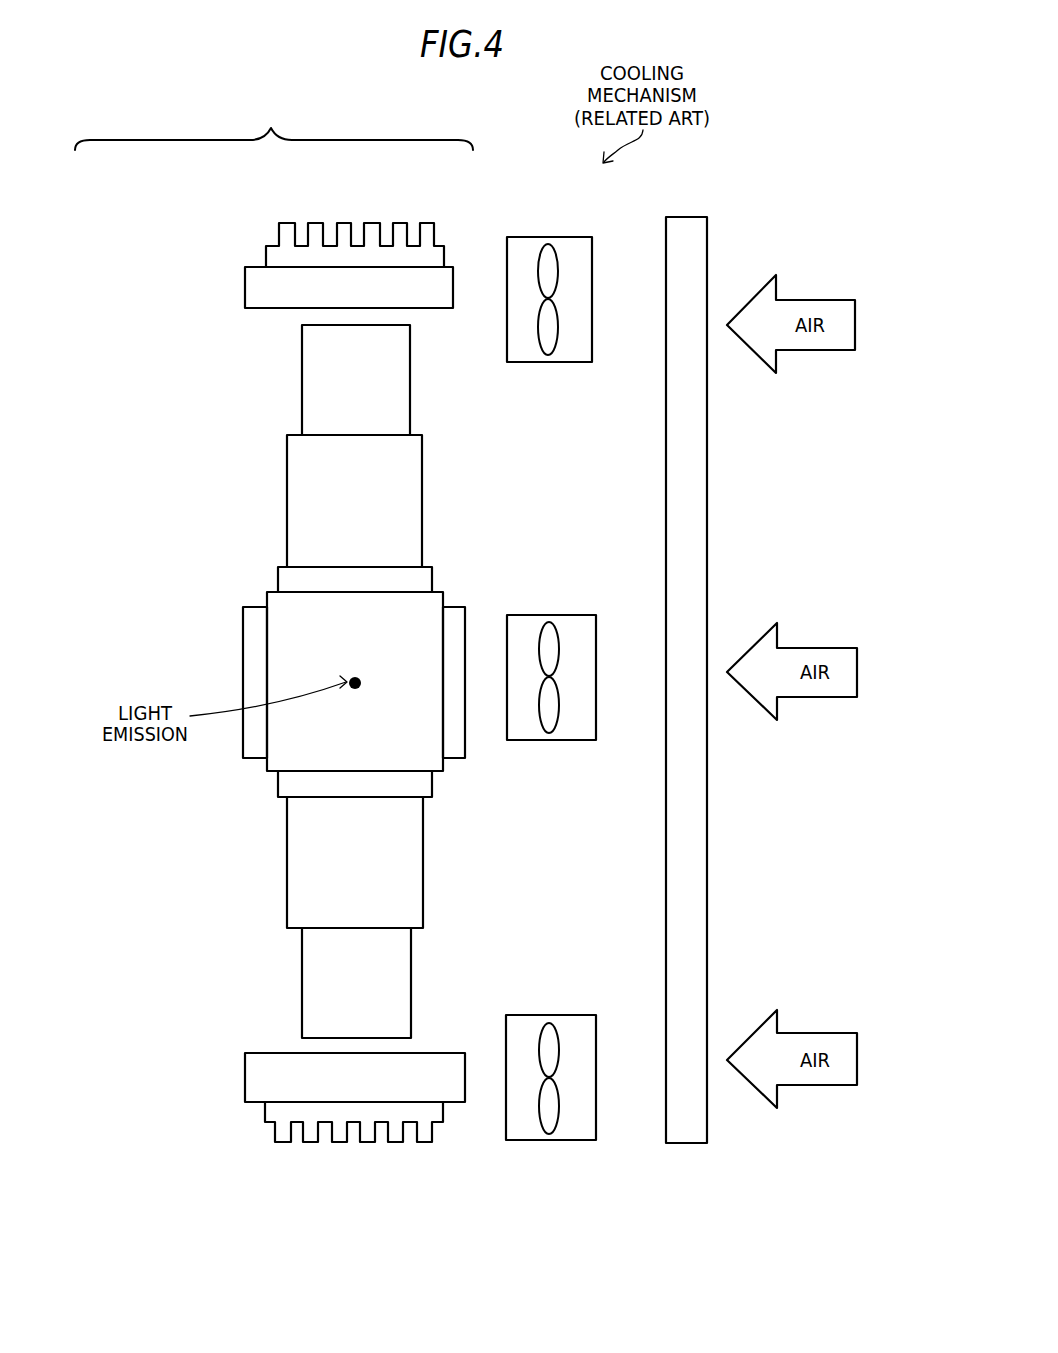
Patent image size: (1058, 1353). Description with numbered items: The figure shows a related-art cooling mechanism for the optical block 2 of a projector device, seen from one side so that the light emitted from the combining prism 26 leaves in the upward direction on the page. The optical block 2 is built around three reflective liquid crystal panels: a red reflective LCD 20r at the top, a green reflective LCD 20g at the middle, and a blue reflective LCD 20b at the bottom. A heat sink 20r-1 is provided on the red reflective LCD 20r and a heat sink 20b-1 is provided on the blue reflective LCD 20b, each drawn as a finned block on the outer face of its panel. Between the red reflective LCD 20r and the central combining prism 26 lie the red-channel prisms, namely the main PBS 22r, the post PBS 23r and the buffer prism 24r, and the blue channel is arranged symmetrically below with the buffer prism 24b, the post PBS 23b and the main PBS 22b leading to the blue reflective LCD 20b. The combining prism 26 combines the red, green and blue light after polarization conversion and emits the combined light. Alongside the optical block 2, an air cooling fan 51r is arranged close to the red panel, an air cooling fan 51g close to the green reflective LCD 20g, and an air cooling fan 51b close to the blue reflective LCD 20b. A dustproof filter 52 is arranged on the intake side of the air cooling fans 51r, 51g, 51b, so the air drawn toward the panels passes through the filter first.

The optical block 2 is at (271, 130).
The red reflective LCD 20r is at (313, 238).
The heat sink 20r-1 is at (283, 223).
The main PBS 22r is at (302, 398).
The post PBS 23r is at (287, 485).
The buffer prism 24r is at (278, 571).
The green reflective LCD 20g is at (243, 640).
The 4p prism 26 is at (443, 772).
The buffer prism 24b is at (278, 785).
The post PBS 23b is at (287, 900).
The main PBS 22b is at (302, 993).
The blue reflective LCD 20b is at (318, 1124).
The heat sink 20b-1 is at (277, 1142).
The air cooling fan 51r is at (520, 362).
The air cooling fan 51g is at (518, 740).
The air cooling fan 51b is at (523, 1140).
The dustproof filter 52 is at (685, 1143).